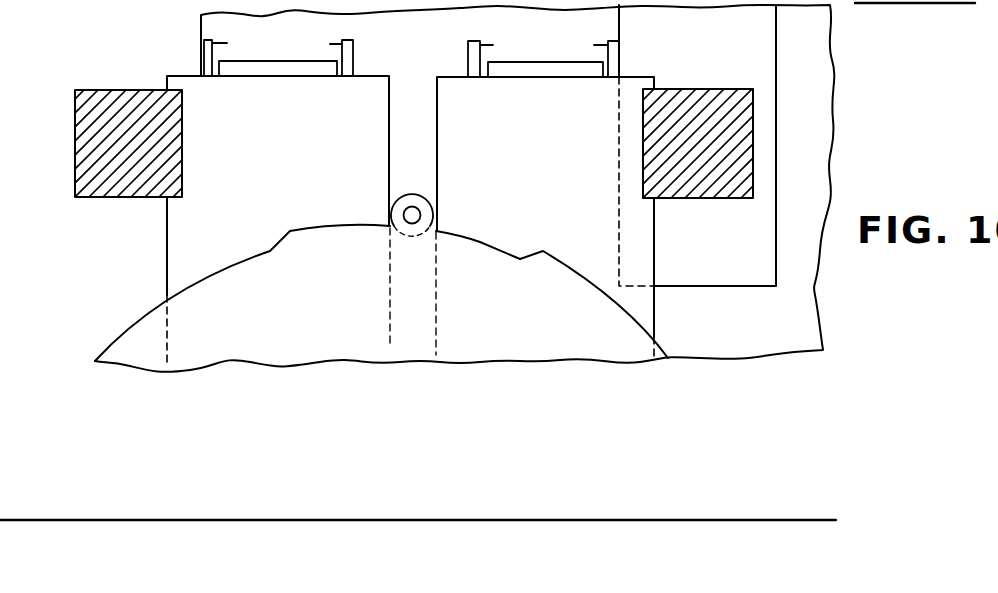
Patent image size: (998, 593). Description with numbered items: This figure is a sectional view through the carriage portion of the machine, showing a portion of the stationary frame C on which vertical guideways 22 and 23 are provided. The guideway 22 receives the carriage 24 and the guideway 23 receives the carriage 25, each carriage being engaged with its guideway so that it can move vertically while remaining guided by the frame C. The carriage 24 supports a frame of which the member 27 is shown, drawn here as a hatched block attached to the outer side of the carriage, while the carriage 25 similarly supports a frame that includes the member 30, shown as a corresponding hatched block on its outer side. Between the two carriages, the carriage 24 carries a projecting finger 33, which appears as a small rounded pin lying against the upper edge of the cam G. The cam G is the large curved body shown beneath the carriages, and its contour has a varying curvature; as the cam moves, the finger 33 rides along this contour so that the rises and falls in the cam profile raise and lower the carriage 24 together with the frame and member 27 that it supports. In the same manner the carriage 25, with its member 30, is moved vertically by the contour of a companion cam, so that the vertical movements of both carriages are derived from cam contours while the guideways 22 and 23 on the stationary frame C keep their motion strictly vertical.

The vertical guideway 22 is at (269, 74).
The vertical guideway 23 is at (513, 72).
The carriage 24 is at (185, 228).
The carriage 25 is at (585, 105).
The frame member 27 is at (110, 137).
The frame member 30 is at (730, 160).
The projecting finger 33 is at (411, 216).
The stationary frame C is at (808, 113).
The cam G is at (537, 287).